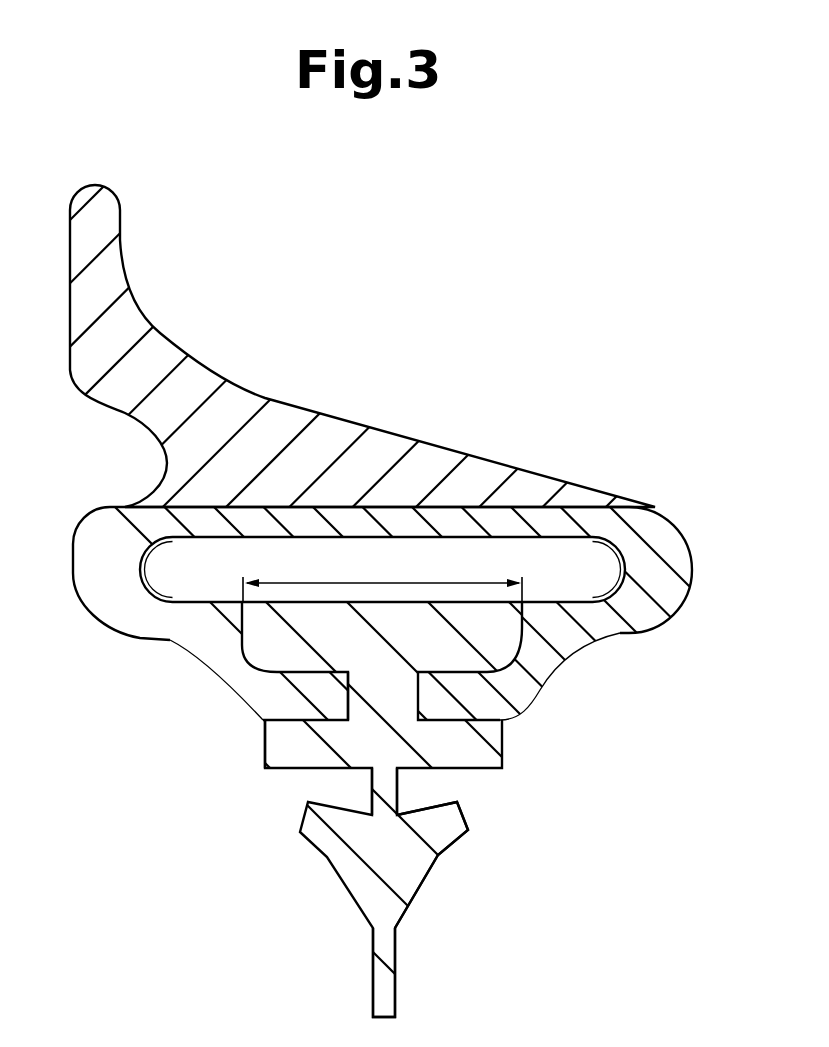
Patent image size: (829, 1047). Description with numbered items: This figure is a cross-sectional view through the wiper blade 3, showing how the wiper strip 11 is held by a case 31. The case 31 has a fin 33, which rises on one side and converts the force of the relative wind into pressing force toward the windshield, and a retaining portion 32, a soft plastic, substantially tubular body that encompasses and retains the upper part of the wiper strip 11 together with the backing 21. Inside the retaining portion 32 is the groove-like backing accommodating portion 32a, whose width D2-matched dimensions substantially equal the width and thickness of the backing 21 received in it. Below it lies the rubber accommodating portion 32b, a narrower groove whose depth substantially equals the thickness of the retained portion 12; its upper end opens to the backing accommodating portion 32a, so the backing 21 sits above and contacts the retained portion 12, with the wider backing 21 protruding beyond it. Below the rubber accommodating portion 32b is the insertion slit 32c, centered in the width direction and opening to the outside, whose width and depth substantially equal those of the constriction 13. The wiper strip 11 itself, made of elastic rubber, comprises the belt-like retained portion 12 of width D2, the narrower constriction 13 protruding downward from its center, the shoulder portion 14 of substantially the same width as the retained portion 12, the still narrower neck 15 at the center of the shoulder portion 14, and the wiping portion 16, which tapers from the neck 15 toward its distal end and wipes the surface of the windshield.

The wiper blade 3 is at (551, 333).
The wiper strip 11 is at (427, 878).
The retained portion 12 is at (522, 698).
The constriction 13 is at (375, 694).
The shoulder portion 14 is at (268, 744).
The neck 15 is at (387, 787).
The wiping portion 16 is at (357, 892).
The backing 21 is at (583, 588).
The case 31 is at (691, 520).
The retaining portion 32 is at (655, 616).
The backing accommodating portion 32a is at (617, 558).
The rubber accommodating portion 32b is at (213, 653).
The insertion slit 32c is at (412, 694).
The fin 33 is at (118, 262).
The width of the retained portion D2 is at (382, 577).